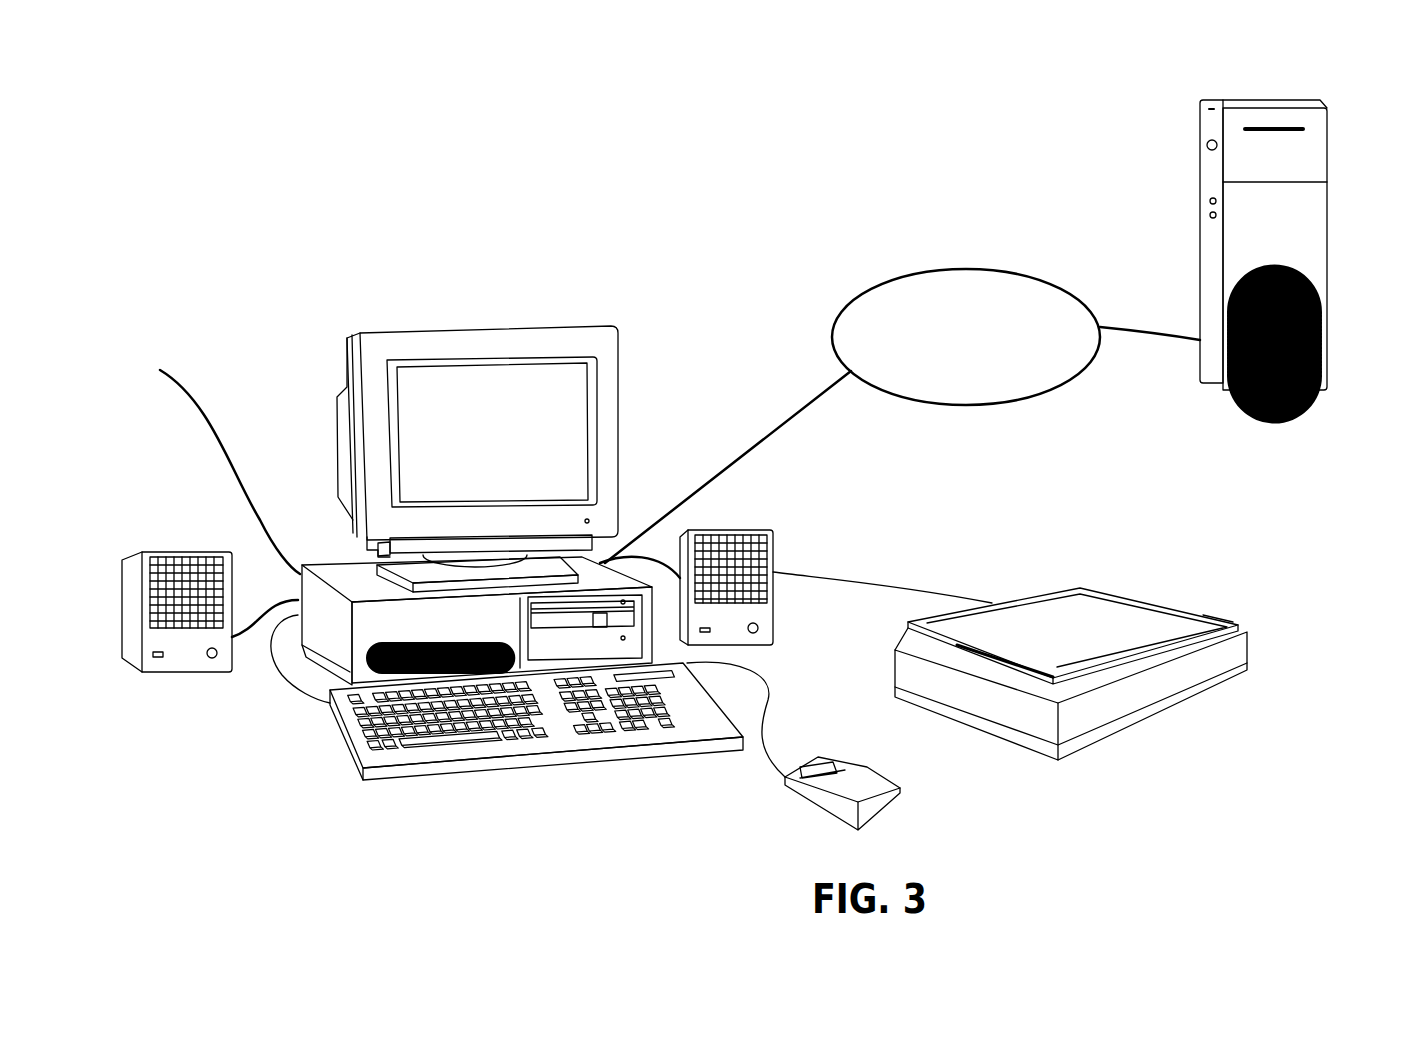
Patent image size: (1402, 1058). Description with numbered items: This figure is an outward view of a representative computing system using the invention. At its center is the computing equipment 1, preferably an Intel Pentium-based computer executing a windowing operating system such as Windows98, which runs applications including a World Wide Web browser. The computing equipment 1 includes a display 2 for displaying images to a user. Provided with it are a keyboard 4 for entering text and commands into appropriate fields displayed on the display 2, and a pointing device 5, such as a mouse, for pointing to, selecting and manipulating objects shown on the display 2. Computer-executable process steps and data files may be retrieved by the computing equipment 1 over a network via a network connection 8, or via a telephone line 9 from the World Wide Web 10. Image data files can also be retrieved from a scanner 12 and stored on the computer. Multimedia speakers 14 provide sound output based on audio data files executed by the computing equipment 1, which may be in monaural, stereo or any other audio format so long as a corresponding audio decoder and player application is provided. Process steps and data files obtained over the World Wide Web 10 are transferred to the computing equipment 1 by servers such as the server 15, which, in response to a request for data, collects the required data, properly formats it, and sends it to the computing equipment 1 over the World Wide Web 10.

The computing equipment 1 is at (622, 318).
The display 2 is at (458, 330).
The keyboard 4 is at (560, 755).
The pointing device 5 is at (888, 803).
The network connection 8 is at (213, 433).
The telephone line 9 is at (803, 408).
The World Wide Web 10 is at (1040, 275).
The scanner 12 is at (1137, 723).
The multimedia speakers 14 is at (187, 548).
The server 15 is at (1328, 228).